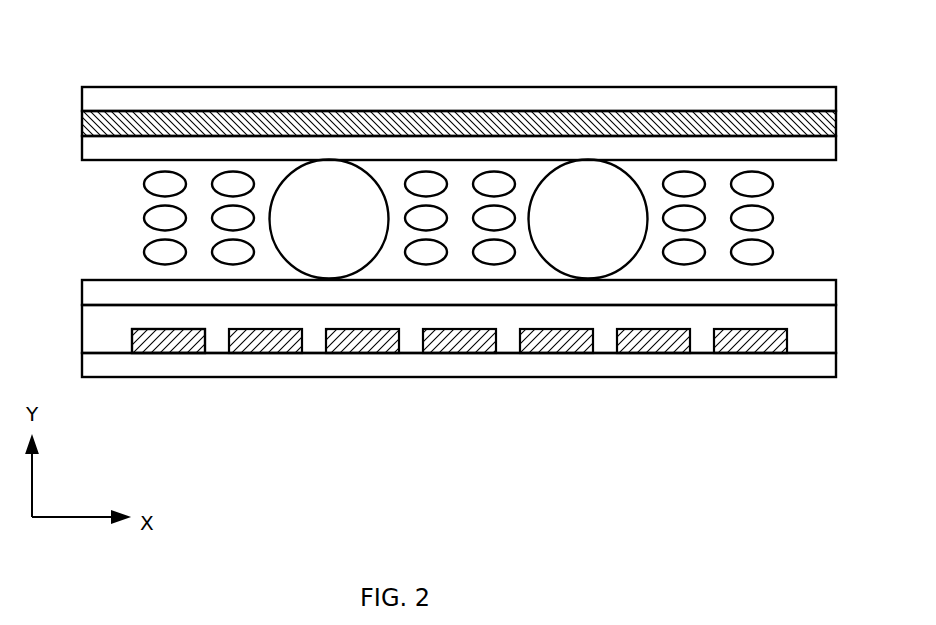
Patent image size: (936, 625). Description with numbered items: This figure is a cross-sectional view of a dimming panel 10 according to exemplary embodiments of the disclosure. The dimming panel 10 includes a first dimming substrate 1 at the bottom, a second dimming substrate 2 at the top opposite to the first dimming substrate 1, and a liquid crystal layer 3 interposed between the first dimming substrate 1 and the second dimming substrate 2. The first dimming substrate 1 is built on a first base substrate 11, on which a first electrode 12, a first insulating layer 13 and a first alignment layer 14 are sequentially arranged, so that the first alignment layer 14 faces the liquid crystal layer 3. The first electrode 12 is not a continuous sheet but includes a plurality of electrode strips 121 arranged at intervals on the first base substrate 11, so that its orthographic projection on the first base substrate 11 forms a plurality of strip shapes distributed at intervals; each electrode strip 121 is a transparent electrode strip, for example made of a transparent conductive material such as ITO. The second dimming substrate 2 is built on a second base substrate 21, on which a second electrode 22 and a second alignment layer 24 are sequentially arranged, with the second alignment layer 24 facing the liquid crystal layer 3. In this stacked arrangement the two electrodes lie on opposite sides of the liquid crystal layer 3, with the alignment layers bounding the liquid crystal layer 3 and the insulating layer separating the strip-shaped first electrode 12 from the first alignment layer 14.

The dimming panel 10 is at (459, 46).
The second dimming substrate 2 is at (498, 122).
The second base substrate 21 is at (826, 97).
The second electrode 22 is at (826, 126).
The second alignment layer 24 is at (484, 155).
The liquid crystal layer 3 is at (160, 218).
The first dimming substrate 1 is at (425, 338).
The first alignment layer 14 is at (100, 292).
The first insulating layer 13 is at (102, 314).
The first electrode 12 is at (131, 340).
The electrode strip 121 is at (193, 344).
The first base substrate 11 is at (442, 376).